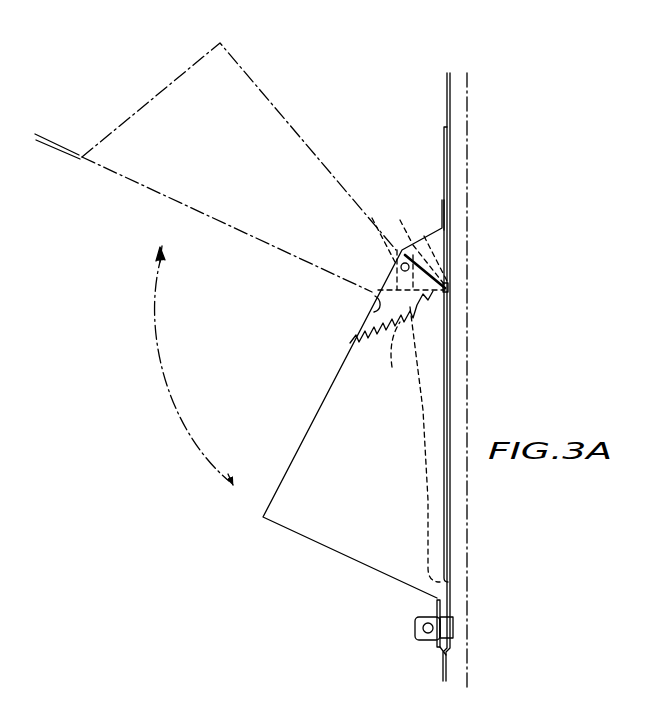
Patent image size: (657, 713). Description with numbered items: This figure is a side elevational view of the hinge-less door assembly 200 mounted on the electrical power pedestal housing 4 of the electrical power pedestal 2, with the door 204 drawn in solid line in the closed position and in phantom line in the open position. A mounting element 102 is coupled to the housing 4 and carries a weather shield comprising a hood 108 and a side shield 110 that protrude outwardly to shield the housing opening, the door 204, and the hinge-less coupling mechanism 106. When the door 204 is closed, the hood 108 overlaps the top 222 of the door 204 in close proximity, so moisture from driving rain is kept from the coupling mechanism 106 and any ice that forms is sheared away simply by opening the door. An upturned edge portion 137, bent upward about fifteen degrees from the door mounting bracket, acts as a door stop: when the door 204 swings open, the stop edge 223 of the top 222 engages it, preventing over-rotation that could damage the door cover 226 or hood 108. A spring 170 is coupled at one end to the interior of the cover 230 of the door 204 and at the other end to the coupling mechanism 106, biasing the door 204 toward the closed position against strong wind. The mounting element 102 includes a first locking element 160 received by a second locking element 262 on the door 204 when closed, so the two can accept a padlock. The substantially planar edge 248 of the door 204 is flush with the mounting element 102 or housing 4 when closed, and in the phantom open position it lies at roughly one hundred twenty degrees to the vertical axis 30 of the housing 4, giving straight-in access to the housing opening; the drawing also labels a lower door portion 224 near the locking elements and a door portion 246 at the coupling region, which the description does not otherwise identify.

The electrical power pedestal 2 is at (410, 685).
The electrical power pedestal housing 4 is at (447, 84).
The vertical axis 30 is at (467, 84).
The mounting element 102 is at (444, 136).
The hinge-less coupling mechanism 106 is at (388, 250).
The hood 108 is at (437, 233).
The side shield 110 is at (425, 416).
The upturned edge portion 137 is at (413, 246).
The first locking element 160 is at (415, 626).
The spring 170 is at (391, 343).
The door assembly 200 is at (245, 501).
The door 204 is at (108, 106).
The top 222 is at (434, 193).
The stop edge 223 is at (447, 287).
The latch tab 224 is at (420, 603).
The door cover 226 is at (338, 376).
The cover 230 is at (204, 66).
The panel corner 246 is at (257, 85).
The substantially planar edge 248 is at (141, 194).
The second locking element 262 is at (440, 608).